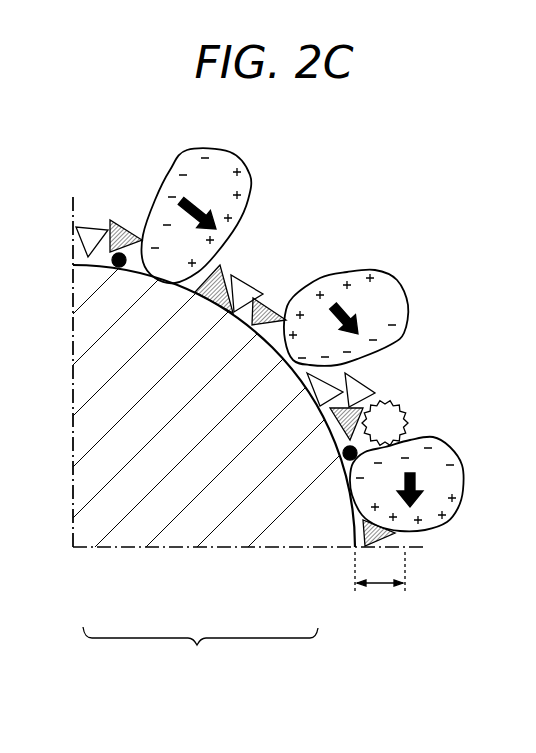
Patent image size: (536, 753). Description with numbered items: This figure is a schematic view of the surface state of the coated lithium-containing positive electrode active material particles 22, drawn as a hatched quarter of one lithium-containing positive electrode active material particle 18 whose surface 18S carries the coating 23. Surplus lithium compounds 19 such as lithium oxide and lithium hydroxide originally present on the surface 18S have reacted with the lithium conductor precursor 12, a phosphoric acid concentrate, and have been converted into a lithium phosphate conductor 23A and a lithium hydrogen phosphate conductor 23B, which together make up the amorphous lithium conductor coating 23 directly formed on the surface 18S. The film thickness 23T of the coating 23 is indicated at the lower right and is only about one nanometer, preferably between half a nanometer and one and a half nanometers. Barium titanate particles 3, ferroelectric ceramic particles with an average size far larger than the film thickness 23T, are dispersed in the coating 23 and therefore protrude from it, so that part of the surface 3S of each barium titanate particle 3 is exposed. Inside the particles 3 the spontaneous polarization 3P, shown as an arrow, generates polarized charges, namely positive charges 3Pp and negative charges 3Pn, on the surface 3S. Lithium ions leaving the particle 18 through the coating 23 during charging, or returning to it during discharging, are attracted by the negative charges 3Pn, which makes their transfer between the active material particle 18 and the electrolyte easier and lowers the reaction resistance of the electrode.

The barium titanate particles 3 is at (309, 381).
The surface of the barium titanate particles 3S is at (249, 187).
The spontaneous polarization 3P is at (368, 313).
The positive charges 3Pp is at (366, 272).
The negative charges 3Pn is at (372, 336).
The lithium conductor precursor 12 is at (393, 407).
The lithium-containing positive electrode active material particles 18 is at (222, 510).
The surface of the lithium-containing positive electrode active material particles 18S is at (73, 248).
The surplus lithium compounds 19 is at (137, 238).
The coated lithium-containing positive electrode active material particles 22 is at (200, 653).
The coating 23 is at (325, 405).
The lithium phosphate conductor 23A is at (253, 284).
The lithium hydrogen phosphate conductor 23B is at (277, 244).
The film thickness 23T is at (380, 590).